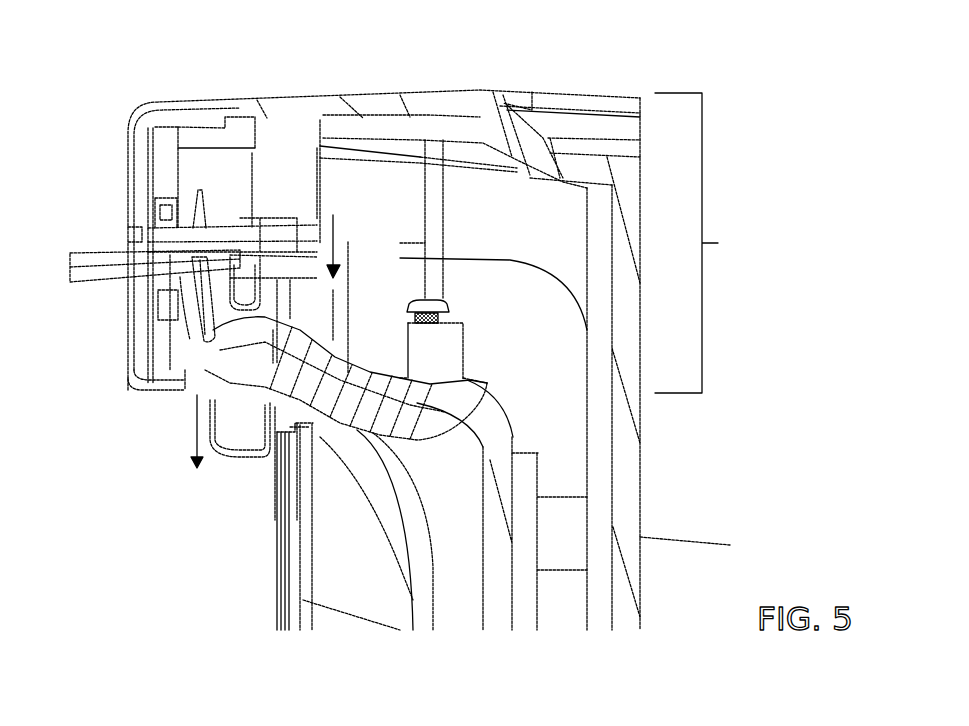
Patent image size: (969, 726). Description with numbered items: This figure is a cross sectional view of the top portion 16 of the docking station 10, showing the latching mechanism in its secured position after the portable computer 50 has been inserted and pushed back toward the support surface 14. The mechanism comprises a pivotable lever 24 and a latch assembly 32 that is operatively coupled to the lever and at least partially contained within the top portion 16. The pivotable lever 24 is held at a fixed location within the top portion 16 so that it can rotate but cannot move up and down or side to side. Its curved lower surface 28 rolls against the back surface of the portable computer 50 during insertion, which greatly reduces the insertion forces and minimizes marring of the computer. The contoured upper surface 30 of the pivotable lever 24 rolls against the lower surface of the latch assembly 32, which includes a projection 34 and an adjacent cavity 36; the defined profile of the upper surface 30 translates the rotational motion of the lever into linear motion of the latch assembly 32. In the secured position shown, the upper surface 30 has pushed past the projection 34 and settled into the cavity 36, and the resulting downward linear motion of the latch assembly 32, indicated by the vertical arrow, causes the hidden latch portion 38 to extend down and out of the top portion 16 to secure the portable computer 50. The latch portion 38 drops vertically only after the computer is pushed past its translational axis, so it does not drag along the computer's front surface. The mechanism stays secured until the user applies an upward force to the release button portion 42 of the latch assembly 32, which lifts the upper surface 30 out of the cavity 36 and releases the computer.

The docking station 10 is at (581, 68).
The support surface 14 is at (487, 625).
The top portion 16 is at (640, 361).
The pivotable lever 24 is at (228, 372).
The lower surface 28 is at (356, 432).
The upper surface 30 is at (176, 320).
The latch assembly 32 is at (188, 230).
The projection 34 is at (241, 294).
The cavity 36 is at (192, 259).
The hidden latch portion 38 is at (236, 452).
The release button portion 42 is at (97, 250).
The portable computer 50 is at (276, 590).